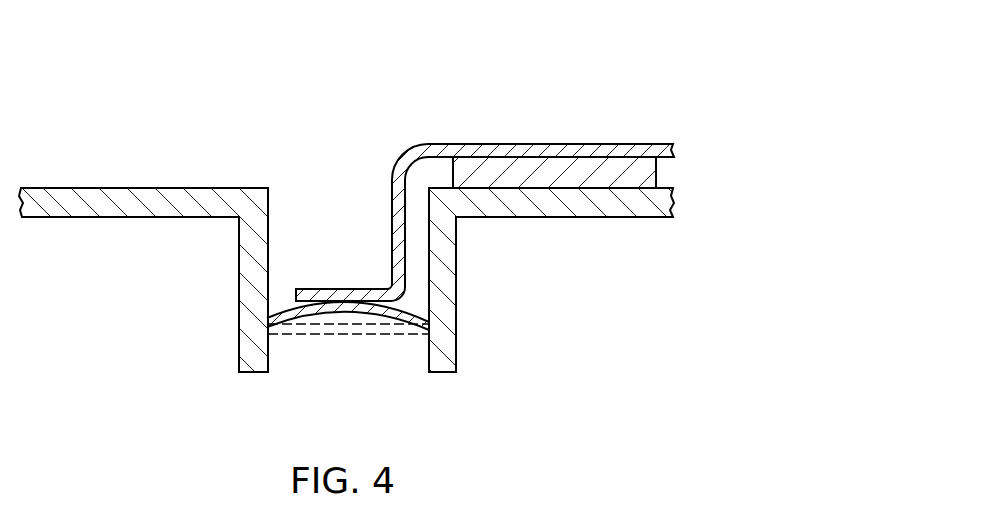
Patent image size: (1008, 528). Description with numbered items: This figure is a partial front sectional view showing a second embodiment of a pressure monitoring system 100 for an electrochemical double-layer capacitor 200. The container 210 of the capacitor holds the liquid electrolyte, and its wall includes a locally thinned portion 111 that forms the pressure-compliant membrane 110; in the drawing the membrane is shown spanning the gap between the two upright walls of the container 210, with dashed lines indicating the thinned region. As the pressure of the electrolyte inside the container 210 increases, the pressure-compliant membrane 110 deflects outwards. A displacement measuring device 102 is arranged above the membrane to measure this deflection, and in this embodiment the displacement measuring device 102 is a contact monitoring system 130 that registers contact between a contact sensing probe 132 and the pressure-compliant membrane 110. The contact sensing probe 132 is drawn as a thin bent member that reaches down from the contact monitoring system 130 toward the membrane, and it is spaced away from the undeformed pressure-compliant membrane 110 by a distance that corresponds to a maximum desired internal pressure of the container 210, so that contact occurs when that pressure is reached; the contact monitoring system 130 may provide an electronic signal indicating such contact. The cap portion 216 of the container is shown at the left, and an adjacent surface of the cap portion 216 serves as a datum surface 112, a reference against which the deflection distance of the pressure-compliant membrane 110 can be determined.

The pressure monitoring system 100 is at (504, 264).
The displacement measuring device 102 is at (534, 264).
The pressure-compliant membrane 110 is at (399, 264).
The locally thinned portion 111 is at (290, 323).
The datum surface 112 is at (303, 264).
The contact monitoring system 130 is at (457, 264).
The contact sensing probe 132 is at (340, 288).
The electrochemical double-layer capacitor 200 is at (500, 445).
The container 210 is at (106, 431).
The cap portion 216 is at (92, 187).